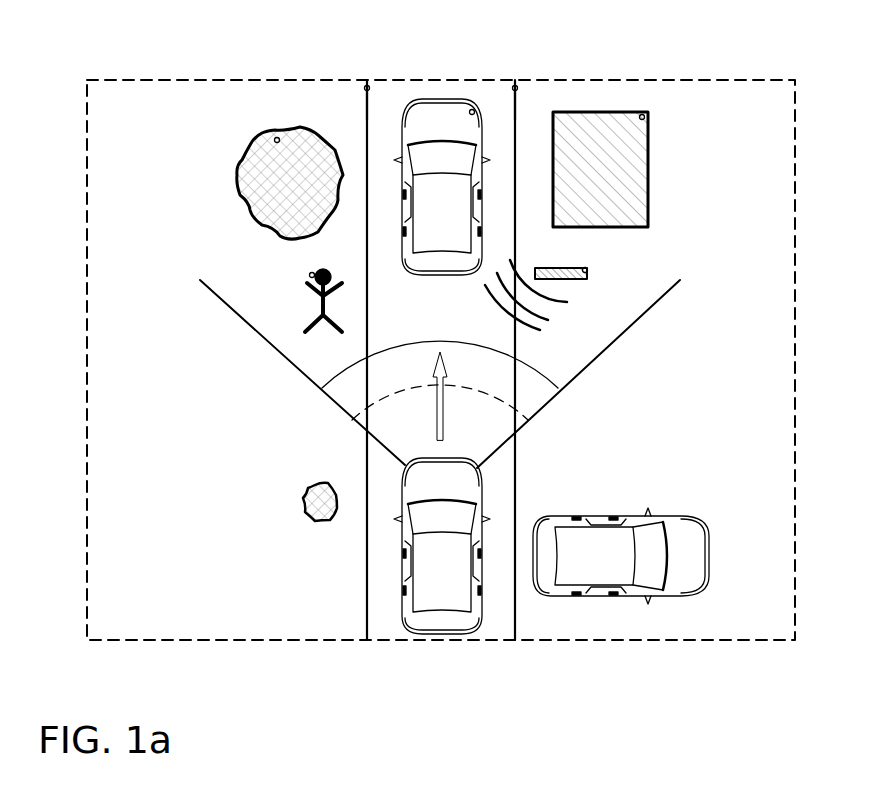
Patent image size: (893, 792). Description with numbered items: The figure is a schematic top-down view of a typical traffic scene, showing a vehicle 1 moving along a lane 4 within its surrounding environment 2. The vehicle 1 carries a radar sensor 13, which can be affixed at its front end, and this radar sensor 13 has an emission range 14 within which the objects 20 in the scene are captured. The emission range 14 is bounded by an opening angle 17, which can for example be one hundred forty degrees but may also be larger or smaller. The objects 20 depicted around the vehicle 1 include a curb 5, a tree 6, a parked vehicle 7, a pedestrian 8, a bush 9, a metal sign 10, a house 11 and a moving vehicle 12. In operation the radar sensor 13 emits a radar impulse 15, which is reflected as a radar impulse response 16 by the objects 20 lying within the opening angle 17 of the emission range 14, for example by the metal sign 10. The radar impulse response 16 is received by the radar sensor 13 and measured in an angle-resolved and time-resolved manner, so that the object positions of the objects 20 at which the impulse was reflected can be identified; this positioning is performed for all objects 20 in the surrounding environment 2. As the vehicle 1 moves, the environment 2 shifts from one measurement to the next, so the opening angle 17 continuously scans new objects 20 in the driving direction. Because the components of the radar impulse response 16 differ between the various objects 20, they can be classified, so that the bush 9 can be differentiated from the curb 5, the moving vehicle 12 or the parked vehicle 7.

The vehicle 1 is at (451, 590).
The surrounding environment 2 is at (168, 80).
The lane 4 is at (393, 96).
The curb 5 is at (367, 110).
The tree 6 is at (263, 165).
The parked vehicle 7 is at (597, 567).
The pedestrian 8 is at (316, 318).
The bush 9 is at (313, 505).
The metal sign 10 is at (589, 273).
The house 11 is at (593, 127).
The moving vehicle 12 is at (442, 115).
The radar sensor 13 is at (441, 460).
The emission range 14 is at (593, 362).
The radar impulse 15 is at (403, 347).
The radar impulse response 16 is at (545, 313).
The opening angle 17 is at (380, 402).
The objects 20 is at (277, 140).